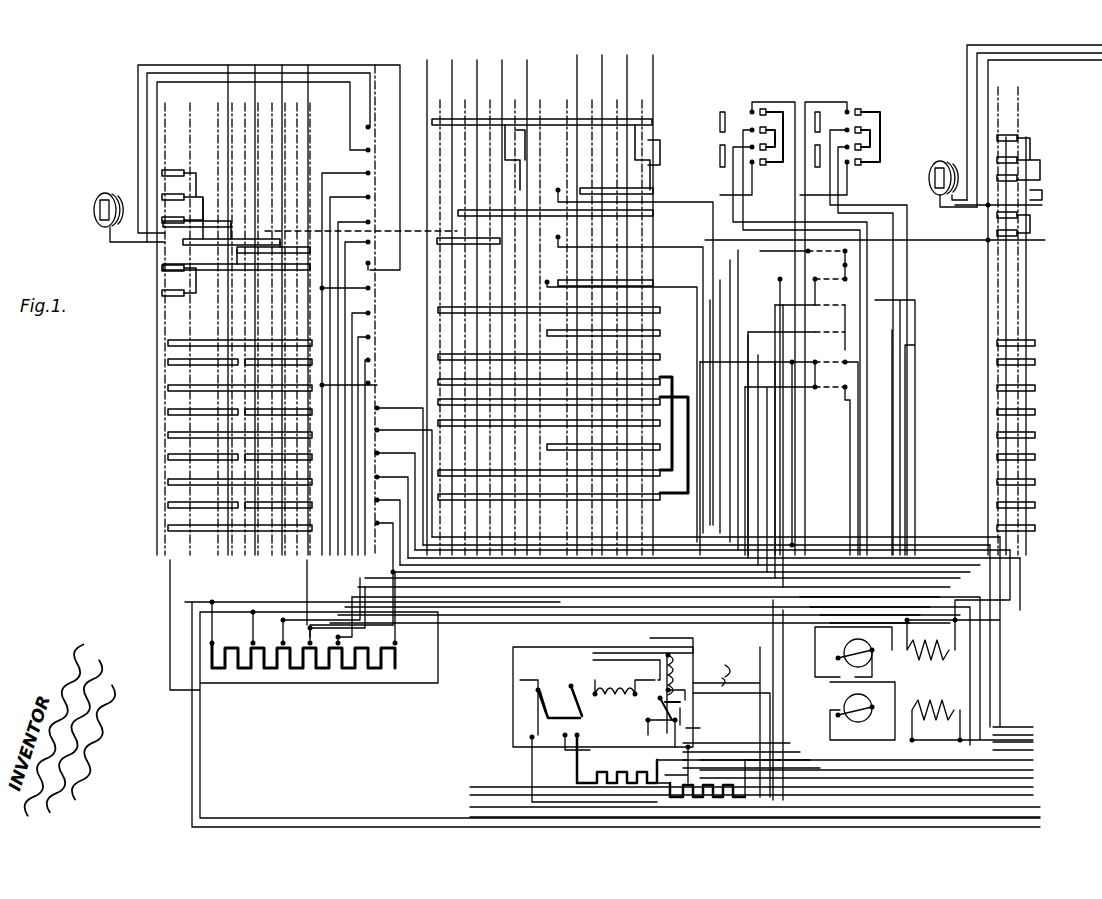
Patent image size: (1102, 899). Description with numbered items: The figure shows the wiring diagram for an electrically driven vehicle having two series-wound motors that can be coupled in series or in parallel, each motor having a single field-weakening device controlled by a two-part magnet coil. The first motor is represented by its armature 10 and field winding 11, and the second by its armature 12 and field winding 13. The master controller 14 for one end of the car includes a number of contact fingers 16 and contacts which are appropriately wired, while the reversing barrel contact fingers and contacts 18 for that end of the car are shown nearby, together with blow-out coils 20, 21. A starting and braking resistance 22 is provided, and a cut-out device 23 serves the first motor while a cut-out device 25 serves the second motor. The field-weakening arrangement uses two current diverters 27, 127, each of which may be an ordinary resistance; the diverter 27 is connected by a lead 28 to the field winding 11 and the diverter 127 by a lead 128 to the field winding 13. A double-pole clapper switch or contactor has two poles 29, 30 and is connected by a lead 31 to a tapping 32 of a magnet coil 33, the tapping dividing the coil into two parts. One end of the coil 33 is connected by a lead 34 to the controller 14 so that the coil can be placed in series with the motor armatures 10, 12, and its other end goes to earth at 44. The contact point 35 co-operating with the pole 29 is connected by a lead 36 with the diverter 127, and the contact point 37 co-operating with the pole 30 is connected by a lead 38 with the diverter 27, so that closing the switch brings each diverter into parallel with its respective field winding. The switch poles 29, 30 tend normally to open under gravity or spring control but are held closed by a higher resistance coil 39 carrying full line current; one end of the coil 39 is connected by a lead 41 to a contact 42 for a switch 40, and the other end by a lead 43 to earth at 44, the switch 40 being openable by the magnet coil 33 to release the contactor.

The armature 10 is at (866, 660).
The field winding 11 is at (945, 650).
The armature 12 is at (862, 712).
The field winding 13 is at (965, 712).
The master controller 14 is at (372, 337).
The contact fingers 16 is at (370, 174).
The reversing barrel contact fingers and contacts 18 is at (813, 315).
The blow-out coil 20 is at (105, 193).
The blow-out coil 21 is at (938, 161).
The starting and braking resistance 22 is at (278, 668).
The cut-out device 23 is at (779, 447).
The cut-out device 25 is at (798, 403).
The current diverter 27 is at (612, 772).
The lead 28 is at (650, 797).
The pole 29 is at (538, 698).
The pole 30 is at (555, 710).
The lead 31 is at (688, 750).
The tapping 32 is at (674, 672).
The magnet coil 33 is at (688, 683).
The lead 34 is at (660, 732).
The contact point 35 is at (545, 684).
The lead 36 is at (532, 770).
The contact point 37 is at (586, 684).
The lead 38 is at (565, 800).
The higher resistance coil 39 is at (615, 700).
The switch 40 is at (678, 704).
The lead 41 is at (640, 662).
The contact 42 is at (690, 718).
The lead 43 is at (660, 650).
The earth 44 is at (736, 683).
The current diverter 127 is at (695, 800).
The lead 128 is at (745, 800).